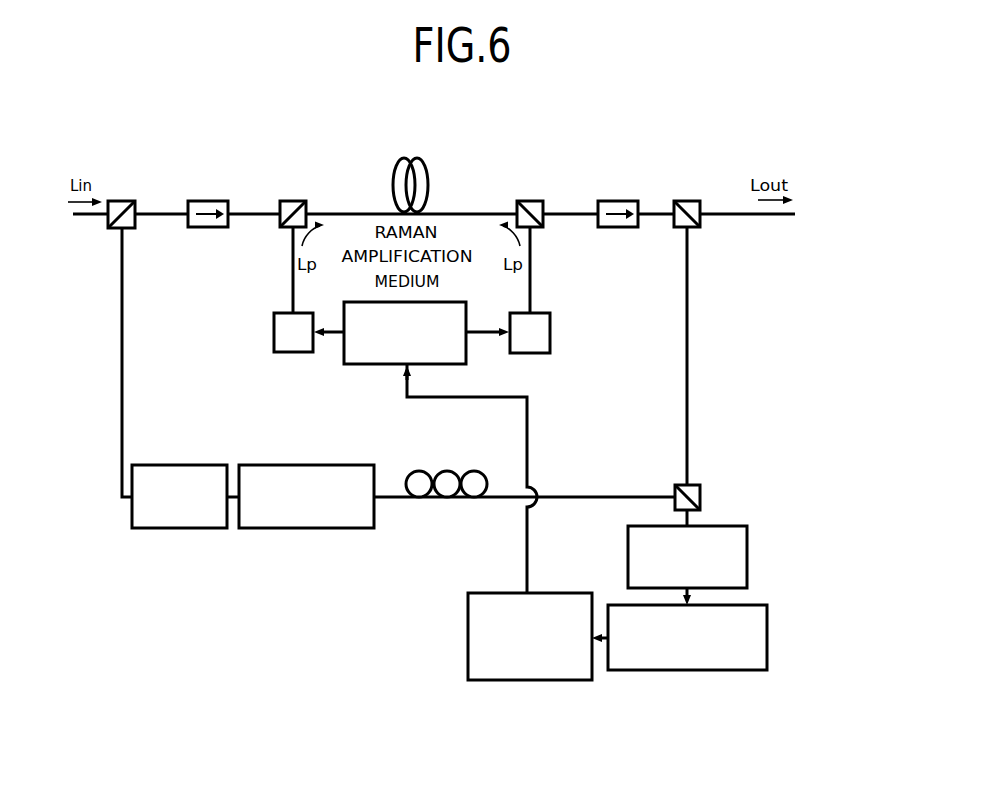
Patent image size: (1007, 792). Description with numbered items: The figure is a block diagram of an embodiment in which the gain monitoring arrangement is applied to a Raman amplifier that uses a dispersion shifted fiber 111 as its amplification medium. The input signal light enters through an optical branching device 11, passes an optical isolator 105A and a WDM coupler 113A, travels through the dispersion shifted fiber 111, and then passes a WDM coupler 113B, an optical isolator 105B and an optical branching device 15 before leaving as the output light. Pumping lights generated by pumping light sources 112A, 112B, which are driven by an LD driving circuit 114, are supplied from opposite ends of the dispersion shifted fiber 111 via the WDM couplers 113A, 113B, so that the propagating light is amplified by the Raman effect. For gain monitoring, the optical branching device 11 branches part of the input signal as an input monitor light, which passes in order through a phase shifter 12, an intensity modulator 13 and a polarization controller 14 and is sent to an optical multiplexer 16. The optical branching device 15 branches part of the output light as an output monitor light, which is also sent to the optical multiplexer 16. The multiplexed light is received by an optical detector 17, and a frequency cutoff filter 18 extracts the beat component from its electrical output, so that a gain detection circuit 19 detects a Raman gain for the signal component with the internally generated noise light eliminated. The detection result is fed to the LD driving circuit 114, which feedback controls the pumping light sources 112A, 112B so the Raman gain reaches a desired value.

The optical branching device 11 is at (123, 201).
The optical isolator 105A is at (208, 201).
The WDM coupler 113A is at (293, 201).
The dispersion shifted fiber 111 is at (414, 158).
The WDM coupler 113B is at (530, 201).
The optical isolator 105B is at (622, 201).
The optical branching device 15 is at (688, 201).
The pumping light source 112A is at (274, 329).
The pumping light source 112B is at (550, 331).
The LD driving circuit 114 is at (344, 348).
The phase shifter 12 is at (187, 465).
The intensity modulator 13 is at (309, 465).
The polarization controller 14 is at (435, 470).
The optical multiplexer 16 is at (700, 496).
The optical detector 17 is at (747, 556).
The frequency cutoff filter 18 is at (767, 622).
The gain detection circuit 19 is at (551, 593).